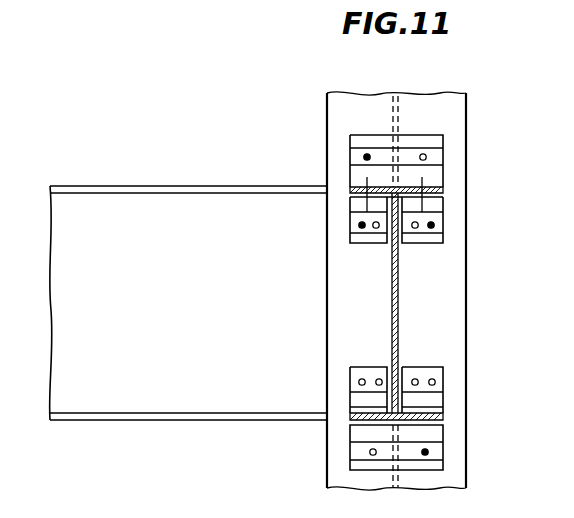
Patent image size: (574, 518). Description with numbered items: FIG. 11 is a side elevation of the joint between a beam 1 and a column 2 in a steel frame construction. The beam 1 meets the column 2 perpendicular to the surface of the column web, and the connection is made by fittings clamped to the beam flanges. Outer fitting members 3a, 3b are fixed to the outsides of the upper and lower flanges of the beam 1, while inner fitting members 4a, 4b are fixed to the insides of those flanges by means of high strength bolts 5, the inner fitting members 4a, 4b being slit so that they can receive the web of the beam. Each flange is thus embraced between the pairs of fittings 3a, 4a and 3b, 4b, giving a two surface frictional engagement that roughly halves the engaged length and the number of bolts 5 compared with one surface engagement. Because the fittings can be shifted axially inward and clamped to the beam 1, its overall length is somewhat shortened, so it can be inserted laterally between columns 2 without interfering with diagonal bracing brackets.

The beam 1 is at (190, 208).
The column 2 is at (466, 143).
The outer fitting member 3a is at (446, 152).
The outer fitting member 3b is at (430, 440).
The inner fitting member 4a is at (353, 219).
The inner fitting member 4b is at (357, 397).
The high strength bolts 5 is at (423, 157).